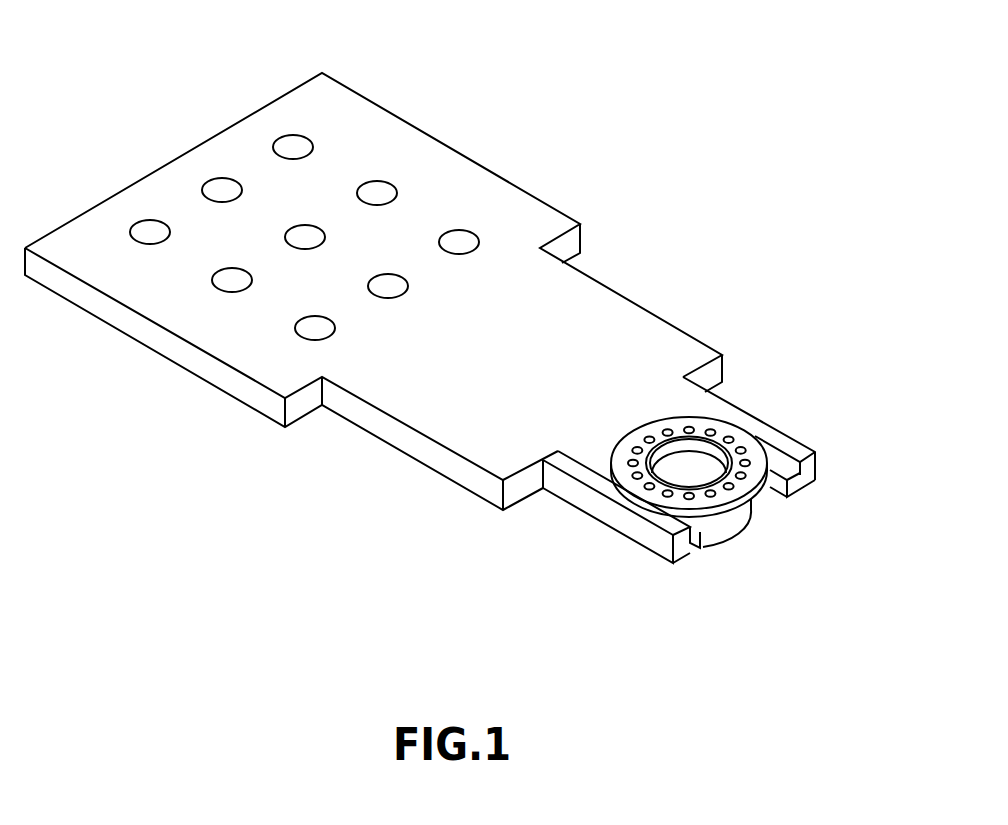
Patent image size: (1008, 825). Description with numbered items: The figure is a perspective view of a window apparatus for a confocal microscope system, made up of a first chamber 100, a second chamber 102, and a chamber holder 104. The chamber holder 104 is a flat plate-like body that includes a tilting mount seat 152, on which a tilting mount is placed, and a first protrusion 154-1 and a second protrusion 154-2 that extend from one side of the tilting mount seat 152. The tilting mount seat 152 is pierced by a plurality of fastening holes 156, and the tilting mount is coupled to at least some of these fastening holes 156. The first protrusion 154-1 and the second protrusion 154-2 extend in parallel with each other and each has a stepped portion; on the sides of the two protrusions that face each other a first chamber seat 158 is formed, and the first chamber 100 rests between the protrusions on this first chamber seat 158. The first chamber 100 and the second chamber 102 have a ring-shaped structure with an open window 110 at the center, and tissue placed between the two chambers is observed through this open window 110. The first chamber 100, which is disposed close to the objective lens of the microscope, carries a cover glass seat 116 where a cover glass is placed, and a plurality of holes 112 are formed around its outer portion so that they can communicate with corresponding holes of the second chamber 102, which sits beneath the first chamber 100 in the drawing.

The first chamber 100 is at (755, 497).
The second chamber 102 is at (722, 530).
The chamber holder 104 is at (520, 150).
The open window 110 is at (713, 463).
The holes 112 is at (710, 432).
The cover glass seat 116 is at (648, 447).
The tilting mount seat 152 is at (410, 147).
The first protrusion 154-1 is at (638, 532).
The second protrusion 154-2 is at (797, 448).
The fastening holes 156 is at (290, 147).
The first chamber seat 158 is at (788, 477).